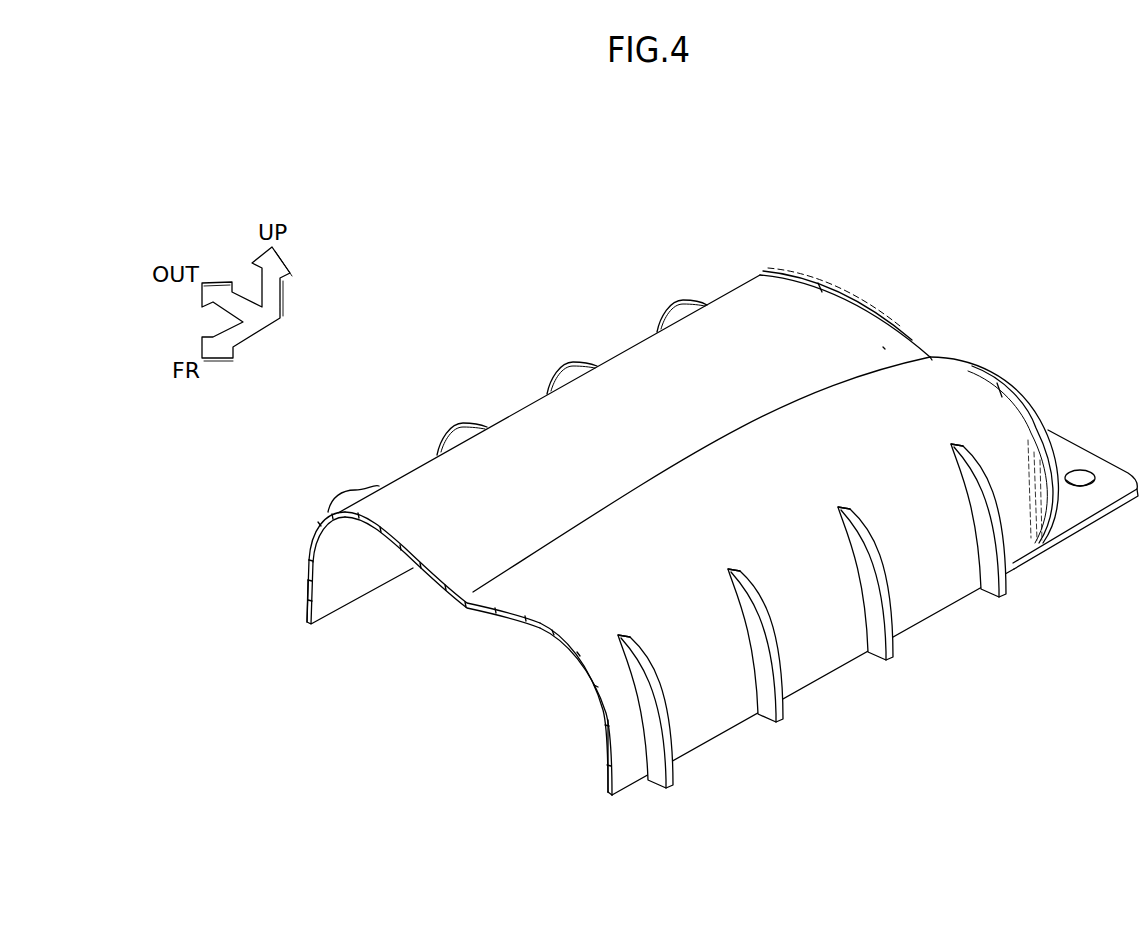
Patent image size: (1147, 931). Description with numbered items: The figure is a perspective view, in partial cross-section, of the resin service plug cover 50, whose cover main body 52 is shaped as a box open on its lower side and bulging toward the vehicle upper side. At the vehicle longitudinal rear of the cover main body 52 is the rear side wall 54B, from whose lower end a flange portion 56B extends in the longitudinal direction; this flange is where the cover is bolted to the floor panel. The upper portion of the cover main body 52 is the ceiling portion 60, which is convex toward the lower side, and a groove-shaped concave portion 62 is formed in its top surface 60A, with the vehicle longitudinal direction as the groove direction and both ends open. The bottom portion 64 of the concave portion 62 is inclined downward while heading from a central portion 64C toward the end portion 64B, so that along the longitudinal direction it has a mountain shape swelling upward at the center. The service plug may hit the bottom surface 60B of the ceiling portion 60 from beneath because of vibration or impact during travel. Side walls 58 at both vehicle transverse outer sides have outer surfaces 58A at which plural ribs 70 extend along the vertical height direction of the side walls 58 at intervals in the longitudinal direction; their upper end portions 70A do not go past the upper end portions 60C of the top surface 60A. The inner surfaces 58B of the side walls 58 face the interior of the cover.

The service plug cover 50 is at (835, 197).
The cover main body 52 is at (767, 266).
The rear side wall 54B is at (1032, 400).
The flange portion 56B is at (1077, 455).
The side wall 58 is at (303, 602).
The outer surface of side wall 58A is at (306, 543).
The inner surface of side wall 58B is at (342, 583).
The ceiling portion 60 is at (422, 550).
The top surface 60A is at (413, 566).
The bottom surface 60B is at (523, 627).
The upper end portion of top surface 60C is at (820, 285).
The concave portion 62 is at (883, 347).
The bottom portion 64 is at (837, 383).
The end portion of bottom portion 64B is at (937, 368).
The central portion of bottom portion 64C is at (688, 462).
The rib 70 is at (680, 300).
The upper end portion of rib 70A is at (703, 317).